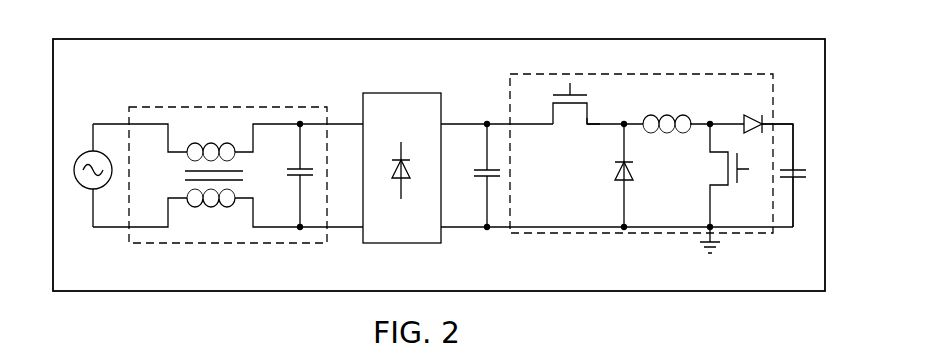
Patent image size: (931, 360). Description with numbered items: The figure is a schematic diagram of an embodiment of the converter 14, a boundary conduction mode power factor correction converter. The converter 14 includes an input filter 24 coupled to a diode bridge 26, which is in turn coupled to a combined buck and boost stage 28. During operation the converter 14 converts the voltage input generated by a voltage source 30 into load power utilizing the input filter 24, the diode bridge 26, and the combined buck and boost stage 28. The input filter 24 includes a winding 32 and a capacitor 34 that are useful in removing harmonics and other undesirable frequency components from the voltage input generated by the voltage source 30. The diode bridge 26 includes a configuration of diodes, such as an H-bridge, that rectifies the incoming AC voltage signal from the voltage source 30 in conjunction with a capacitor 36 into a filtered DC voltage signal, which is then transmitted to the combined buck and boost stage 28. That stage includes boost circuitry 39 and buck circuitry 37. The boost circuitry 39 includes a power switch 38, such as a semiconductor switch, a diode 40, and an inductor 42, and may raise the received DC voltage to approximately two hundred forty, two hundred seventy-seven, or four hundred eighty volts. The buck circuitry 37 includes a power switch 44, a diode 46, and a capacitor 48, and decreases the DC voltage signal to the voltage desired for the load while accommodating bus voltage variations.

The converter 14 is at (742, 40).
The input filter 24 is at (245, 107).
The diode bridge 26 is at (441, 100).
The combined buck and boost stage 28 is at (645, 74).
The voltage source 30 is at (82, 152).
The winding 32 is at (200, 126).
The capacitor 34 is at (292, 168).
The capacitor 36 is at (478, 168).
The buck circuitry 37 is at (540, 101).
The power switch 38 is at (720, 187).
The boost circuitry 39 is at (788, 98).
The diode 40 is at (615, 169).
The inductor 42 is at (663, 134).
The power switch 44 is at (591, 110).
The diode 46 is at (752, 117).
The capacitor 48 is at (805, 166).